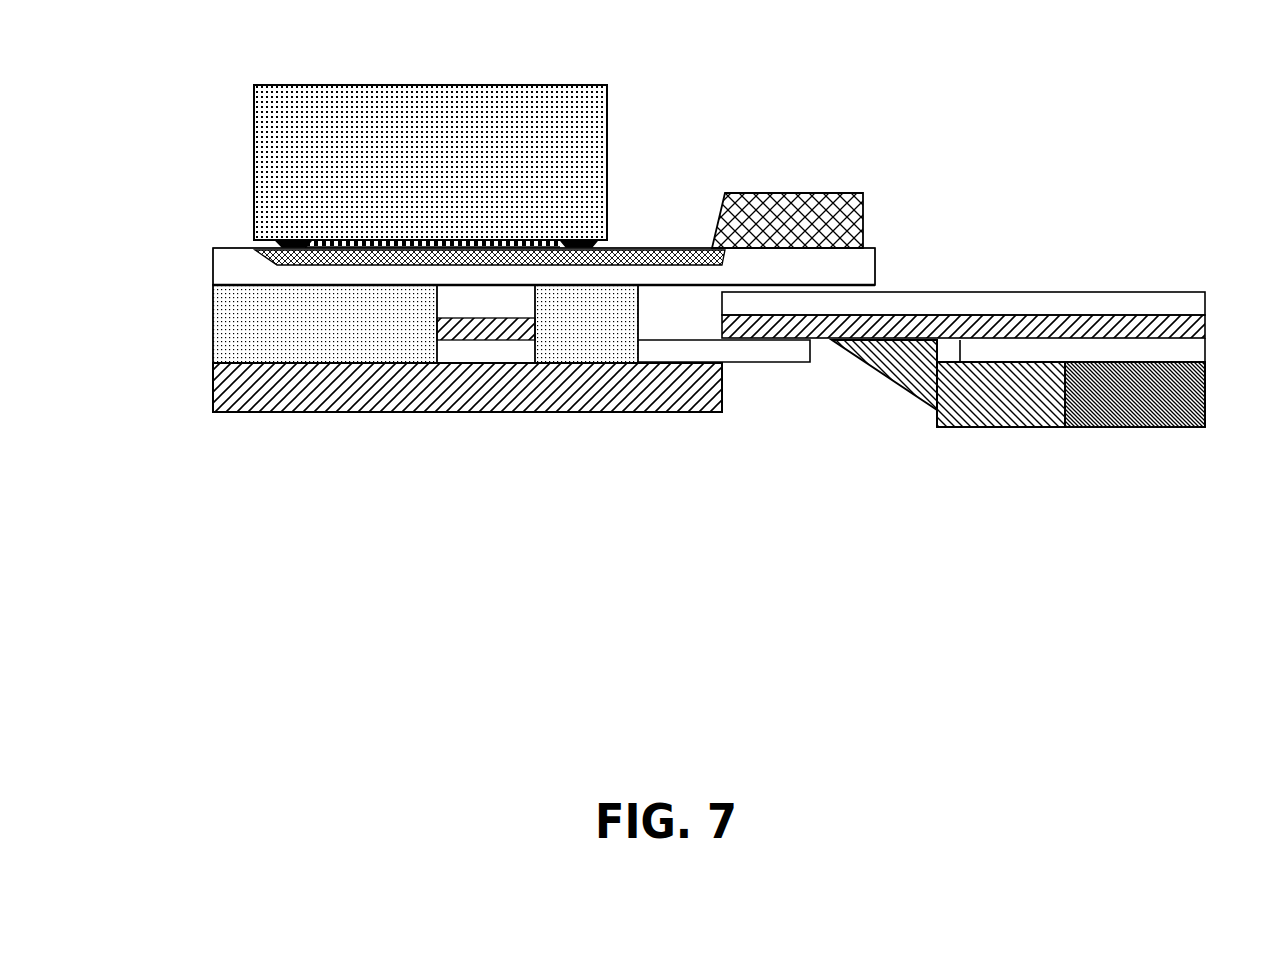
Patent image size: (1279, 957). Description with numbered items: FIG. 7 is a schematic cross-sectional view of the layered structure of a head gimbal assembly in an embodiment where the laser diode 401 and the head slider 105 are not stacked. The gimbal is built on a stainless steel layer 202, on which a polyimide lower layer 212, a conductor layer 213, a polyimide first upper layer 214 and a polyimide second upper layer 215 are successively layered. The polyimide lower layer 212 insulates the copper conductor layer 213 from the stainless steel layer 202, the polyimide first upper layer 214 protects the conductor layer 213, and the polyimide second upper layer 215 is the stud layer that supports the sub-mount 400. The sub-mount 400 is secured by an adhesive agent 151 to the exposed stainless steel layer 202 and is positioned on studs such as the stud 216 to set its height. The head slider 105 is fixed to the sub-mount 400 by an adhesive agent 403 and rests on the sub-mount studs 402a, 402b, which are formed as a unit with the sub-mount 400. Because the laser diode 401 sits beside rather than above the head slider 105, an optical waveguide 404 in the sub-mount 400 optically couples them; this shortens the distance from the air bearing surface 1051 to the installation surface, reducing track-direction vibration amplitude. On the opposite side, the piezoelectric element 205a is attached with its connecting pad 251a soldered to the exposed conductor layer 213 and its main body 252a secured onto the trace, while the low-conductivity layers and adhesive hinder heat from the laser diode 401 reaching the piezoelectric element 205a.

The air bearing surface 1051 is at (413, 84).
The head slider 105 is at (253, 165).
The sub-mount stud 402b is at (277, 243).
The adhesive agent 403 is at (497, 240).
The sub-mount stud 402a is at (588, 250).
The optical waveguide 404 is at (277, 263).
The sub-mount 400 is at (544, 266).
The laser diode 401 is at (780, 193).
The adhesive agent 151 is at (213, 326).
The polyimide second upper layer 215 is at (497, 290).
The stud 216 is at (488, 347).
The stainless steel layer 202 is at (332, 411).
The polyimide lower layer 212 is at (747, 363).
The polyimide first upper layer 214 is at (973, 293).
The conductor layer 213 is at (1207, 318).
The connecting pad 251a is at (997, 428).
The main body 252a is at (1130, 428).
The piezoelectric element 205a is at (1162, 535).